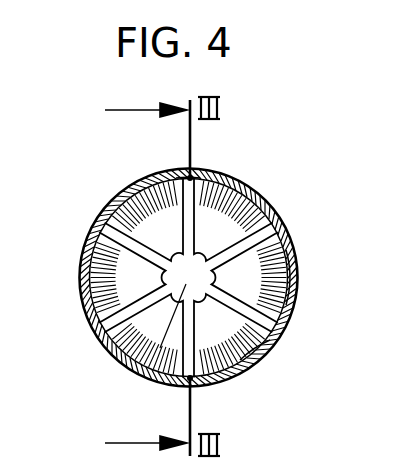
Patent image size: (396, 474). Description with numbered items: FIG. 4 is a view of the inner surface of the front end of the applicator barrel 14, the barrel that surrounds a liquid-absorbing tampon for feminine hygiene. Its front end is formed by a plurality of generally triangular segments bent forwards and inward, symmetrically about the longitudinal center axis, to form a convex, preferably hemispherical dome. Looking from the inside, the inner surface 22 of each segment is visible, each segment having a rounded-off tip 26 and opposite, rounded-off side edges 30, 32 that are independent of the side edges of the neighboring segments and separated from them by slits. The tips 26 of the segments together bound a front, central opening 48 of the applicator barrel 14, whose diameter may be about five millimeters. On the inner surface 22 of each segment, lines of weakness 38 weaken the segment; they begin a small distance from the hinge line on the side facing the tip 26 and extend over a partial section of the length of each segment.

The applicator barrel 14 is at (262, 193).
The inner surface 22 is at (134, 283).
The rounded-off tip 26 is at (289, 244).
The side edge 30 is at (121, 202).
The side edge 32 is at (173, 170).
The lines of weakness 38 is at (257, 357).
The front central opening 48 is at (160, 348).